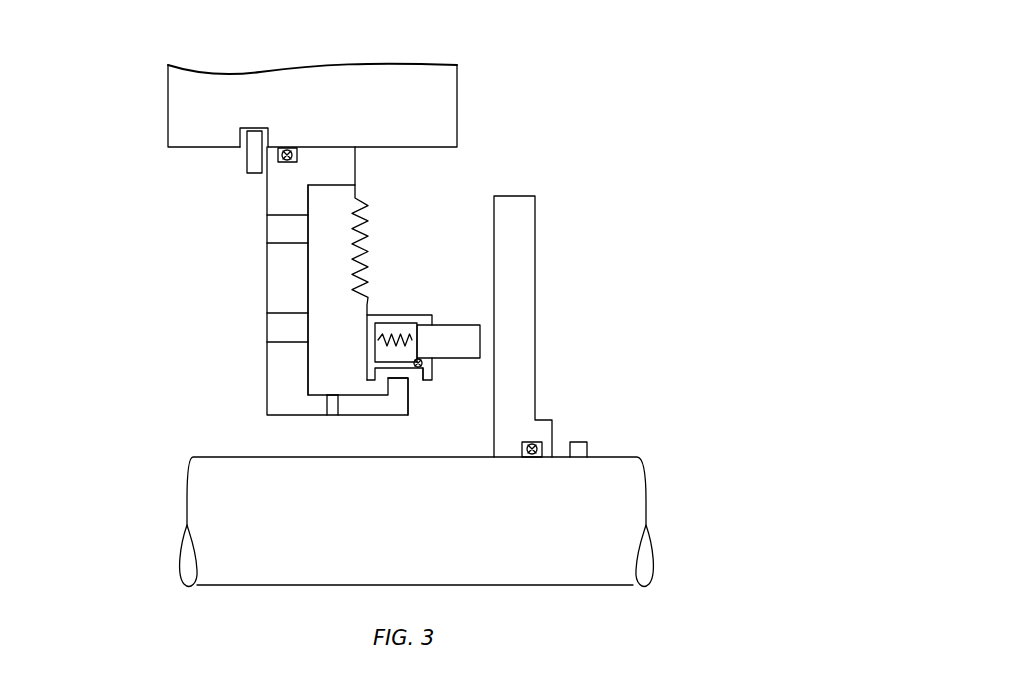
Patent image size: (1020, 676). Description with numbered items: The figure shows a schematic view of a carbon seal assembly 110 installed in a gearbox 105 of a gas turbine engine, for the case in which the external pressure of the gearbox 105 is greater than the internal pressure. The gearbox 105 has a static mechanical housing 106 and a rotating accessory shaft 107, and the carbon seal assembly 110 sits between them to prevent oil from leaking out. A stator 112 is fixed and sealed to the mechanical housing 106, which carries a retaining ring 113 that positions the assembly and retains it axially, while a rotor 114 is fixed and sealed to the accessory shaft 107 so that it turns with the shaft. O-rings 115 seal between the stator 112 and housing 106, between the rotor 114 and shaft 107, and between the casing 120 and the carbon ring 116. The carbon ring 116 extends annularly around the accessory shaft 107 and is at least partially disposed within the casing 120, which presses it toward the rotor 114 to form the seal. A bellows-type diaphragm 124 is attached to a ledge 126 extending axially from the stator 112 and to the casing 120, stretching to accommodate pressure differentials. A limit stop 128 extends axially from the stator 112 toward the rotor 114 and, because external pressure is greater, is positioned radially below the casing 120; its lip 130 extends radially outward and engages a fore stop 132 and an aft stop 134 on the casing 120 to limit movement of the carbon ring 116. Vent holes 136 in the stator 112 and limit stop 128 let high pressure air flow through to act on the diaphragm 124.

The gearbox 105 is at (495, 52).
The mechanical housing 106 is at (168, 104).
The accessory shaft 107 is at (617, 457).
The carbon seal assembly 110 is at (560, 163).
The stator 112 is at (267, 297).
The retaining ring 113 is at (240, 163).
The rotor 114 is at (537, 286).
The O-ring 115 is at (283, 163).
The carbon ring 116 is at (480, 337).
The casing 120 is at (428, 313).
The diaphragm 124 is at (368, 236).
The ledge 126 is at (333, 185).
The limit stop 128 is at (340, 408).
The lip 130 is at (410, 397).
The fore stop 132 is at (365, 372).
The aft stop 134 is at (432, 360).
The vent hole 136 is at (267, 228).